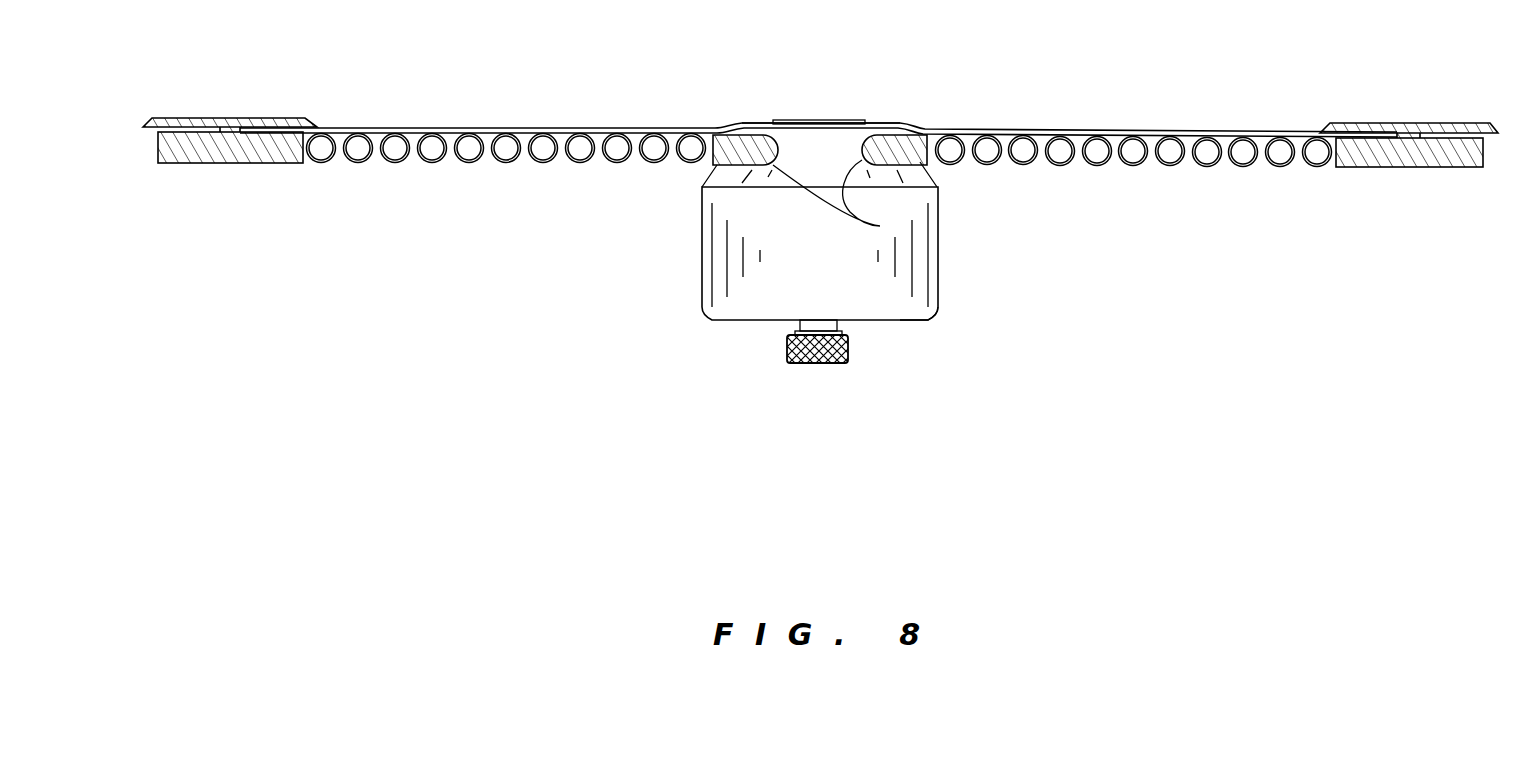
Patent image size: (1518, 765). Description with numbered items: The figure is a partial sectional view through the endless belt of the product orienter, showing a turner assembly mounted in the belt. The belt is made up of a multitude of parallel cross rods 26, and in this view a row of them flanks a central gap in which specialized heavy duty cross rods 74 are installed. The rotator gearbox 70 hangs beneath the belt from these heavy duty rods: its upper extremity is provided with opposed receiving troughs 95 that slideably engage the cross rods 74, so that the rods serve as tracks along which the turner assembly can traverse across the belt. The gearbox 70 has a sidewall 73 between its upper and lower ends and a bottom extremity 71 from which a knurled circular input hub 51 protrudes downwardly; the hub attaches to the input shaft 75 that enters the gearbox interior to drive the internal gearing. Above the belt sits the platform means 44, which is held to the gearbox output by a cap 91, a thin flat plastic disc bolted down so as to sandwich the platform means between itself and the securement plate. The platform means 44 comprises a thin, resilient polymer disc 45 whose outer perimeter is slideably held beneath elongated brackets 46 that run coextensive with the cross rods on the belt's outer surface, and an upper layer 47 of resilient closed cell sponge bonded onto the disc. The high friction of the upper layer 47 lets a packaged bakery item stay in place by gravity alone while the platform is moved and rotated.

The cross rods 26 is at (330, 158).
The platform means 44 is at (773, 90).
The disc 45 is at (485, 134).
The elongated brackets 46 is at (229, 130).
The upper layer 47 is at (1080, 132).
The knurled circular input hub 51 is at (848, 350).
The rotator gearbox 70 is at (833, 296).
The bottom extremity 71 is at (903, 322).
The sidewall 73 is at (702, 262).
The specialized heavy duty cross rods 74 is at (743, 140).
The input shaft 75 is at (797, 323).
The cap 91 is at (830, 120).
The receiving troughs 95 is at (880, 226).